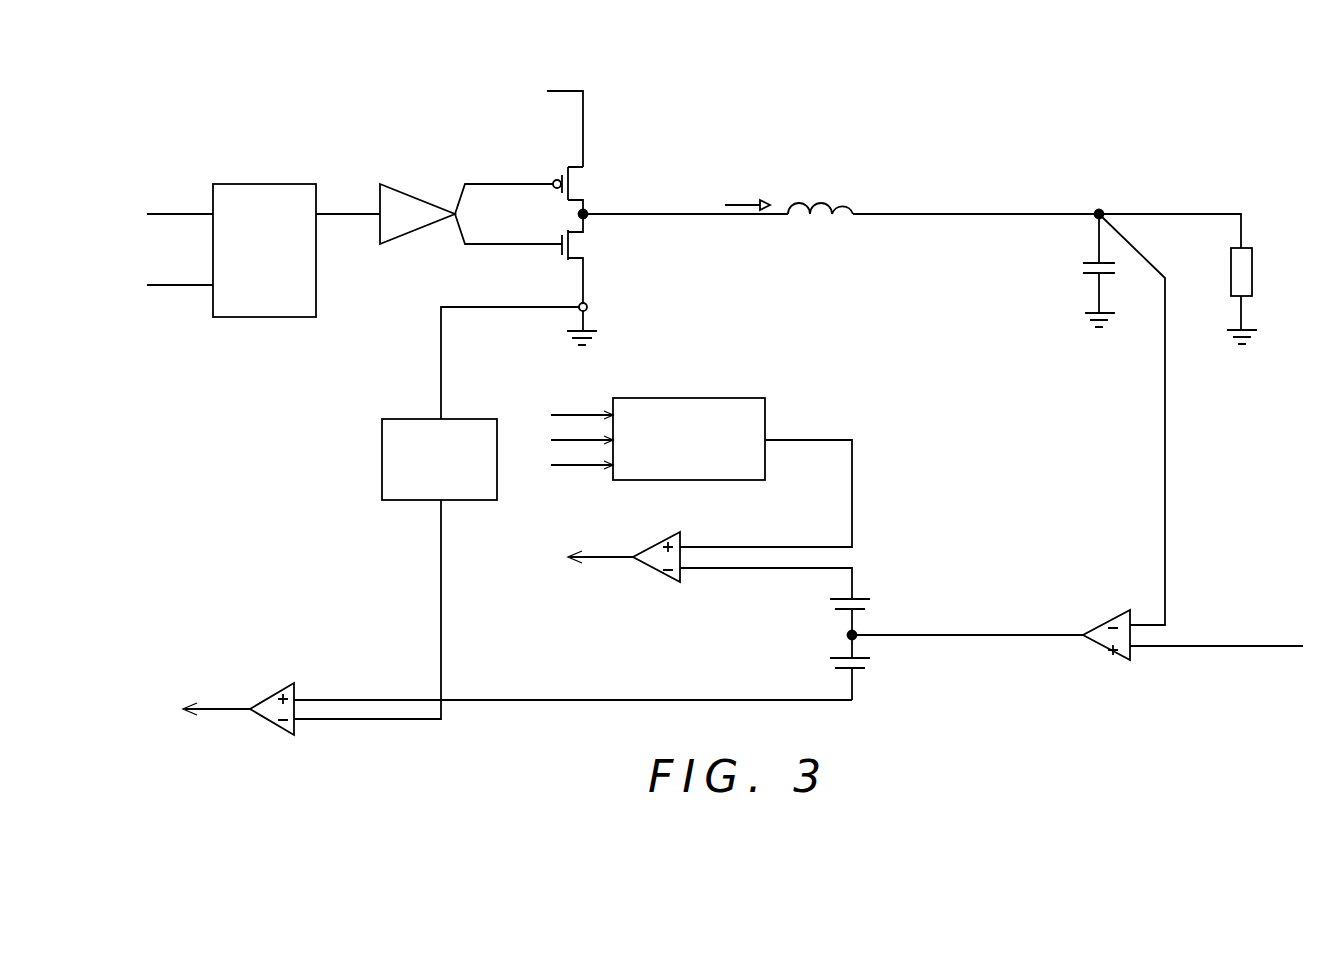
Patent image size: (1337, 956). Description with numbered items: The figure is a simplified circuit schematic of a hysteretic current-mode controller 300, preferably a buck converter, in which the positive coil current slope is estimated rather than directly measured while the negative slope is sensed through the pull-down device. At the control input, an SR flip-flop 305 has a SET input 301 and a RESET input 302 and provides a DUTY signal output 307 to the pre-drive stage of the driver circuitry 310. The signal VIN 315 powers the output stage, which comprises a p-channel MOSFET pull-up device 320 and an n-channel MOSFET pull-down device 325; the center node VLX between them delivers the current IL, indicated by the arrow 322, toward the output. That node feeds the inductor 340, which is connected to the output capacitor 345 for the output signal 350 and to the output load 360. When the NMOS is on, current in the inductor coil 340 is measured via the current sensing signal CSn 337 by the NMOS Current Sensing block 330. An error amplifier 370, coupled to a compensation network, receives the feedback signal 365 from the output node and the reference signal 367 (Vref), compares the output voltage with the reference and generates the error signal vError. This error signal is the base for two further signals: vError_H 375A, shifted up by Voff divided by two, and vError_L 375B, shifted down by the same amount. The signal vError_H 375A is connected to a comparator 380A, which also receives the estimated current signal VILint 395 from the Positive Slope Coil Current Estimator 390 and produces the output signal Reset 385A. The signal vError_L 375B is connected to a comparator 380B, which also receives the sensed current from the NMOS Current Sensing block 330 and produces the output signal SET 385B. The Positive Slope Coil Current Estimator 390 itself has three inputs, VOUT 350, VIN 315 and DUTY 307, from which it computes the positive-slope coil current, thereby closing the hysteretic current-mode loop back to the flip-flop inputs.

The hysteretic current-mode controller 300 is at (182, 131).
The SET input 301 is at (168, 184).
The RESET input 302 is at (168, 255).
The SR flip-flop 305 is at (255, 184).
The DUTY signal output 307 is at (345, 220).
The driver circuitry 310 is at (411, 183).
The signal VIN 315 is at (553, 62).
The p-channel MOSFET pull-up device 320 is at (597, 176).
The inductor current IL 322 is at (739, 176).
The n-channel MOSFET pull-down device 325 is at (598, 258).
The NMOS Current Sensing circuit 330 is at (424, 418).
The current sensing signal CSn 337 is at (442, 377).
The inductor 340 is at (815, 224).
The output capacitor 345 is at (1060, 284).
The output signal 350 is at (1256, 193).
The output load 360 is at (1272, 258).
The feedback signal 365 is at (1166, 554).
The reference signal 367 is at (1257, 646).
The error amplifier 370 is at (1122, 612).
The signal vError_H 375A is at (867, 586).
The signal vError_L 375B is at (870, 686).
The comparator 380A is at (672, 532).
The comparator 380B is at (289, 683).
The output signal Reset 385A is at (588, 530).
The output signal SET 385B is at (203, 677).
The Positive Slope Coil Current Estimator 390 is at (680, 398).
The signal VILint 395 is at (853, 482).